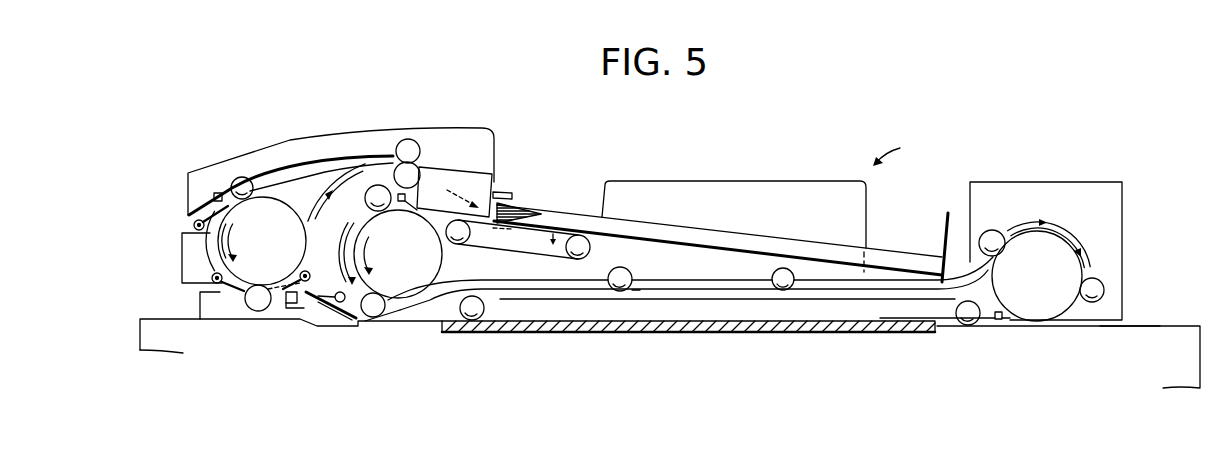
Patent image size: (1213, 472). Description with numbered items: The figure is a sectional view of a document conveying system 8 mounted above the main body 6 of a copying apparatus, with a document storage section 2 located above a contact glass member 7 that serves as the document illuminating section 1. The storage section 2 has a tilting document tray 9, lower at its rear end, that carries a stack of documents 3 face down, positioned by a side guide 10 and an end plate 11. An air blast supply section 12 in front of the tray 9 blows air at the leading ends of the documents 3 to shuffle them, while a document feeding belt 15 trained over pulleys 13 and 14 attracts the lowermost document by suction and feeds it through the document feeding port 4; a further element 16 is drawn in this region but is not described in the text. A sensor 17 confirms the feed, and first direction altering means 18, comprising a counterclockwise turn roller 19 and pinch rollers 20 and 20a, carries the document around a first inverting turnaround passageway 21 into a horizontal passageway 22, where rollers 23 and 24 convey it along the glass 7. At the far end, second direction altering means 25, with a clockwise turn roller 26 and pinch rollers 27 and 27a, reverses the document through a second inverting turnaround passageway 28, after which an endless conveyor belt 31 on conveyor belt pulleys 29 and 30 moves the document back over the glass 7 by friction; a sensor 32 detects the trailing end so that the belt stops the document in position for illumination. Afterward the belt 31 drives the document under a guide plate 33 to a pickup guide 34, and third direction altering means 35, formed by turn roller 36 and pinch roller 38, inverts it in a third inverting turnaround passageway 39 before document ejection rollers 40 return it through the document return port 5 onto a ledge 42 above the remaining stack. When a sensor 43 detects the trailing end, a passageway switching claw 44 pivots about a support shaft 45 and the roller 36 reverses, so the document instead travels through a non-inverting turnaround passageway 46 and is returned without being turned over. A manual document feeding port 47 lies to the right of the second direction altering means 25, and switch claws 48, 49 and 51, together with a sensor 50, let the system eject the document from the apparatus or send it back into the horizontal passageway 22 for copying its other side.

The document illuminating section 1 is at (583, 335).
The document storage section 2 is at (686, 256).
The document 3 is at (594, 233).
The document feeding port 4 is at (487, 224).
The document return port 5 is at (496, 176).
The main body 6 is at (1200, 325).
The contact glass member 7 is at (752, 331).
The document conveying system 8 is at (893, 148).
The document tray 9 is at (637, 237).
The side guide 10 is at (744, 181).
The end plate 11 is at (948, 211).
The air blast supply section 12 is at (453, 167).
The pulley 13 is at (591, 250).
The pulley 14 is at (451, 246).
The document feeding belt 15 is at (515, 250).
The sensor 16 is at (554, 248).
The sensor 17 is at (402, 211).
The first direction altering means 18 is at (342, 200).
The turn roller 19 is at (402, 300).
The pinch roller 20 is at (373, 185).
The pinch roller 20a is at (368, 293).
The first inverting turnaround passageway 21 is at (355, 224).
The horizontal passageway 22 is at (637, 290).
The roller 23 is at (632, 274).
The roller 24 is at (796, 268).
The second direction altering means 25 is at (1049, 203).
The turn roller 26 is at (1077, 308).
The pinch roller 27 is at (995, 229).
The pinch roller 27a is at (1103, 284).
The second inverting turnaround passageway 28 is at (1083, 246).
The conveyor belt pulley 29 is at (955, 313).
The conveyor belt pulley 30 is at (473, 320).
The conveyor belt 31 is at (880, 297).
The sensor 32 is at (998, 320).
The guide plate 33 is at (431, 322).
The pickup guide 34 is at (340, 303).
The third direction altering means 35 is at (200, 258).
The turn roller 36 is at (275, 172).
The pinch roller 38 is at (236, 178).
The third inverting turnaround passageway 39 is at (210, 264).
The document ejection rollers 40 is at (400, 164).
The ledge 42 is at (493, 190).
The sensor 43 is at (266, 312).
The passageway switching claw 44 is at (297, 304).
The support shaft 45 is at (297, 268).
The non-inverting turnaround passageway 46 is at (302, 224).
The document feeding port 47 is at (1133, 326).
The switch claw 48 is at (225, 322).
The switch claw 49 is at (196, 221).
The sensor 50 is at (212, 193).
The switch claw 51 is at (358, 324).